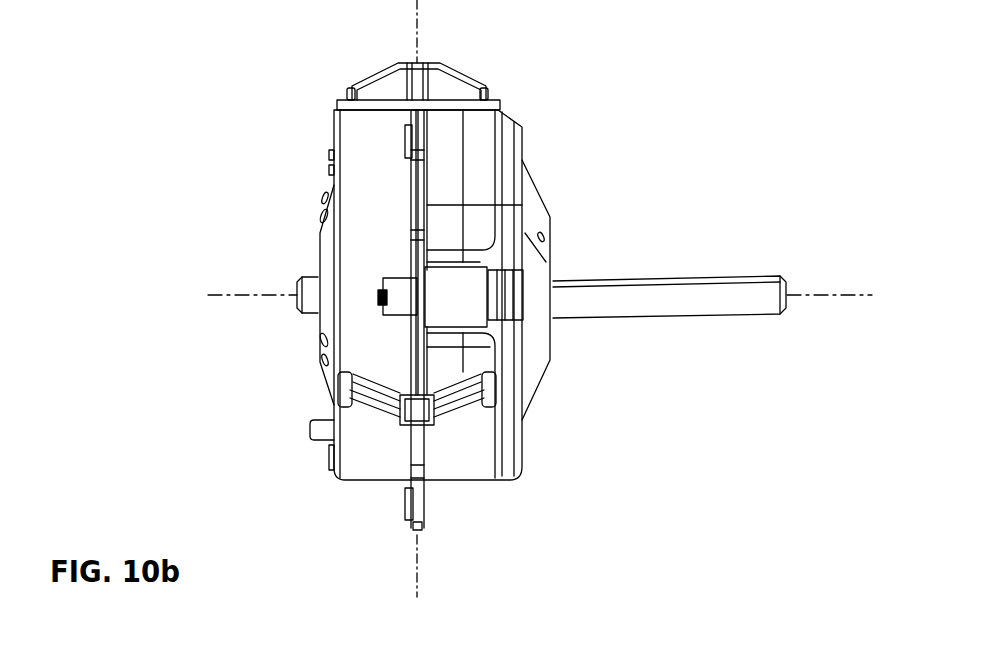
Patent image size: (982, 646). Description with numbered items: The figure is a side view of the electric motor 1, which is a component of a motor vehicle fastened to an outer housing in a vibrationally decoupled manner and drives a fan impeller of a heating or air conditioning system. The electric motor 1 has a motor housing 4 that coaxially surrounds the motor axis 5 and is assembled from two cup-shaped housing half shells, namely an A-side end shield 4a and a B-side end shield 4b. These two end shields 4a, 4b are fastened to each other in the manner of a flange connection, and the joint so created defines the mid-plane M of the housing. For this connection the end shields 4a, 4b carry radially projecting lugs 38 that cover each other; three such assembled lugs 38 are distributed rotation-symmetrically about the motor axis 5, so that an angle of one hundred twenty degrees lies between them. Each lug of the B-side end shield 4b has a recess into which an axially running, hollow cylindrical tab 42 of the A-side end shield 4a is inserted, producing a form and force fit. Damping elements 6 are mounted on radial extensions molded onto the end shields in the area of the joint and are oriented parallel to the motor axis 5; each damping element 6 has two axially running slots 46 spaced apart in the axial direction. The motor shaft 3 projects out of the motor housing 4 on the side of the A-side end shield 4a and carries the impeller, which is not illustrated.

The electric motor 1 is at (673, 120).
The motor shaft 3 is at (722, 287).
The motor housing 4 is at (367, 467).
The A-side end shield 4a is at (533, 217).
The B-side end shield 4b is at (362, 141).
The motor axis 5 is at (833, 293).
The damping element 6 is at (387, 85).
The lug 38 is at (427, 520).
The tab 42 is at (407, 515).
The axially running slot 46 is at (382, 407).
The mid-plane M is at (420, 23).